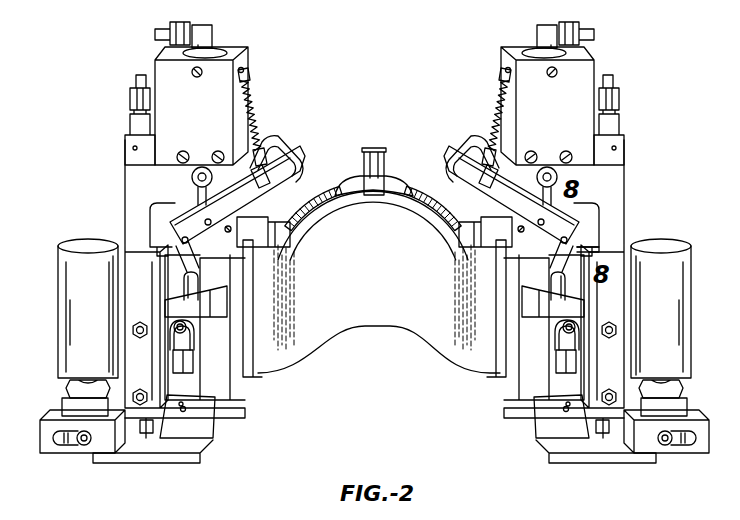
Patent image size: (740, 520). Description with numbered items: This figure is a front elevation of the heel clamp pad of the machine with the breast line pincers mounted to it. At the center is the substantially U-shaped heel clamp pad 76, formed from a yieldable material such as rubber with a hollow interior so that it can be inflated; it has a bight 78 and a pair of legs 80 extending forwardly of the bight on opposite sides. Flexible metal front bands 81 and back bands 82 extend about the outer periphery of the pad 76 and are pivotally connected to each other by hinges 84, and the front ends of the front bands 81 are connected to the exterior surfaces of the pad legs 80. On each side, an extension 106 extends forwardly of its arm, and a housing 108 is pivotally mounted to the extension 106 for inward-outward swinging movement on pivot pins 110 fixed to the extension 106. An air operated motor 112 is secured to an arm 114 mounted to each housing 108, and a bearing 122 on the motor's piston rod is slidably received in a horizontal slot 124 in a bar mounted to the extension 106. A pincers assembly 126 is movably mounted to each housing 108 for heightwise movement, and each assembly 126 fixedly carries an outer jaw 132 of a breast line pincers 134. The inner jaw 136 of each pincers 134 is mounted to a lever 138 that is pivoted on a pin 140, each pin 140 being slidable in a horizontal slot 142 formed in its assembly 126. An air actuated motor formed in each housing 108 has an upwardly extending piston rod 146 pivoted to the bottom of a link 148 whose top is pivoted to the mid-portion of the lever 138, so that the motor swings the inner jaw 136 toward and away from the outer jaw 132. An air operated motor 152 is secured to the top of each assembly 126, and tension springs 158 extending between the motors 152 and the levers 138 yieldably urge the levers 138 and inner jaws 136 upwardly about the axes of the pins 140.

The heel clamp pad 76 is at (367, 343).
The bight 78 is at (388, 188).
The legs 80 is at (262, 375).
The front bands 81 is at (453, 220).
The back bands 82 is at (327, 193).
The hinges 84 is at (303, 193).
The extension 106 is at (555, 440).
The housing 108 is at (533, 365).
The pivot pins 110 is at (187, 416).
The air operated motor 112 is at (68, 318).
The arm 114 is at (680, 410).
The bearing 122 is at (665, 440).
The horizontal slot 124 is at (78, 445).
The pincers assembly 126 is at (140, 268).
The outer jaw 132 is at (266, 250).
The breast line pincers 134 is at (300, 140).
The inner jaw 136 is at (487, 140).
The lever 138 is at (248, 192).
The pin 140 is at (593, 223).
The horizontal slot 142 is at (598, 232).
The piston rod 146 is at (188, 293).
The link 148 is at (204, 238).
The air operated motor 152 is at (168, 78).
The tension springs 158 is at (257, 103).